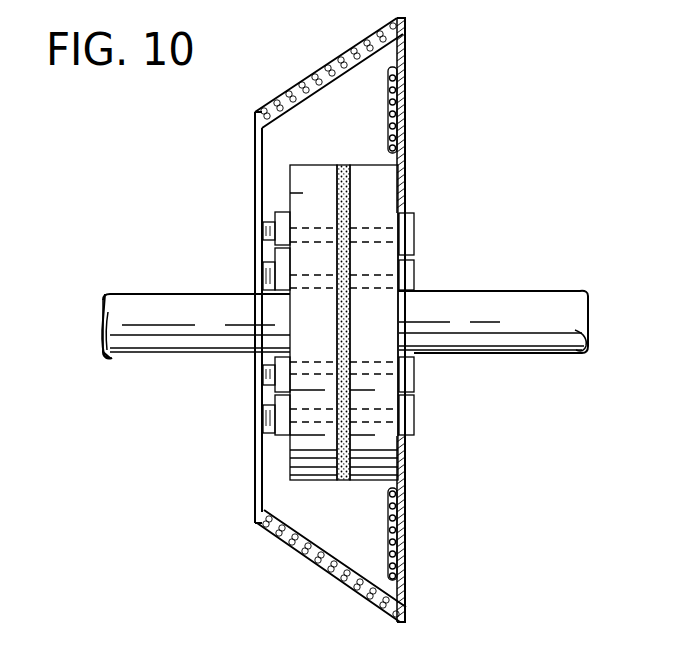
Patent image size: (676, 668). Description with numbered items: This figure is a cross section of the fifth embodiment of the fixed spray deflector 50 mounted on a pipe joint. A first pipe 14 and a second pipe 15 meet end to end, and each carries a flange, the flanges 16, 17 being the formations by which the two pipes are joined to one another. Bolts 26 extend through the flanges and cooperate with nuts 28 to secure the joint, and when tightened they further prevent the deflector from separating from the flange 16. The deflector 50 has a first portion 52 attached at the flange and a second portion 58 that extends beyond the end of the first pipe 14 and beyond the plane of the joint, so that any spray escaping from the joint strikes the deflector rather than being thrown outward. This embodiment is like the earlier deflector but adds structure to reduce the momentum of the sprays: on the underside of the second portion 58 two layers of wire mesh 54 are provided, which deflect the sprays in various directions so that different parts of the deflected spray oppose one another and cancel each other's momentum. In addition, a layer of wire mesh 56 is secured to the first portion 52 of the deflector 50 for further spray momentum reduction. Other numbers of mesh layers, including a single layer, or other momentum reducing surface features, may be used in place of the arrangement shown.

The deflector 50 is at (330, 320).
The first portion 52 is at (405, 112).
The wire mesh 54 is at (282, 118).
The wire mesh 56 is at (388, 128).
The second portion 58 is at (300, 95).
The flange 16 is at (387, 190).
The flange 17 is at (303, 192).
The bolts 26 is at (260, 418).
The nuts 28 is at (262, 257).
The pipe 14 is at (492, 295).
The pipe 15 is at (155, 300).